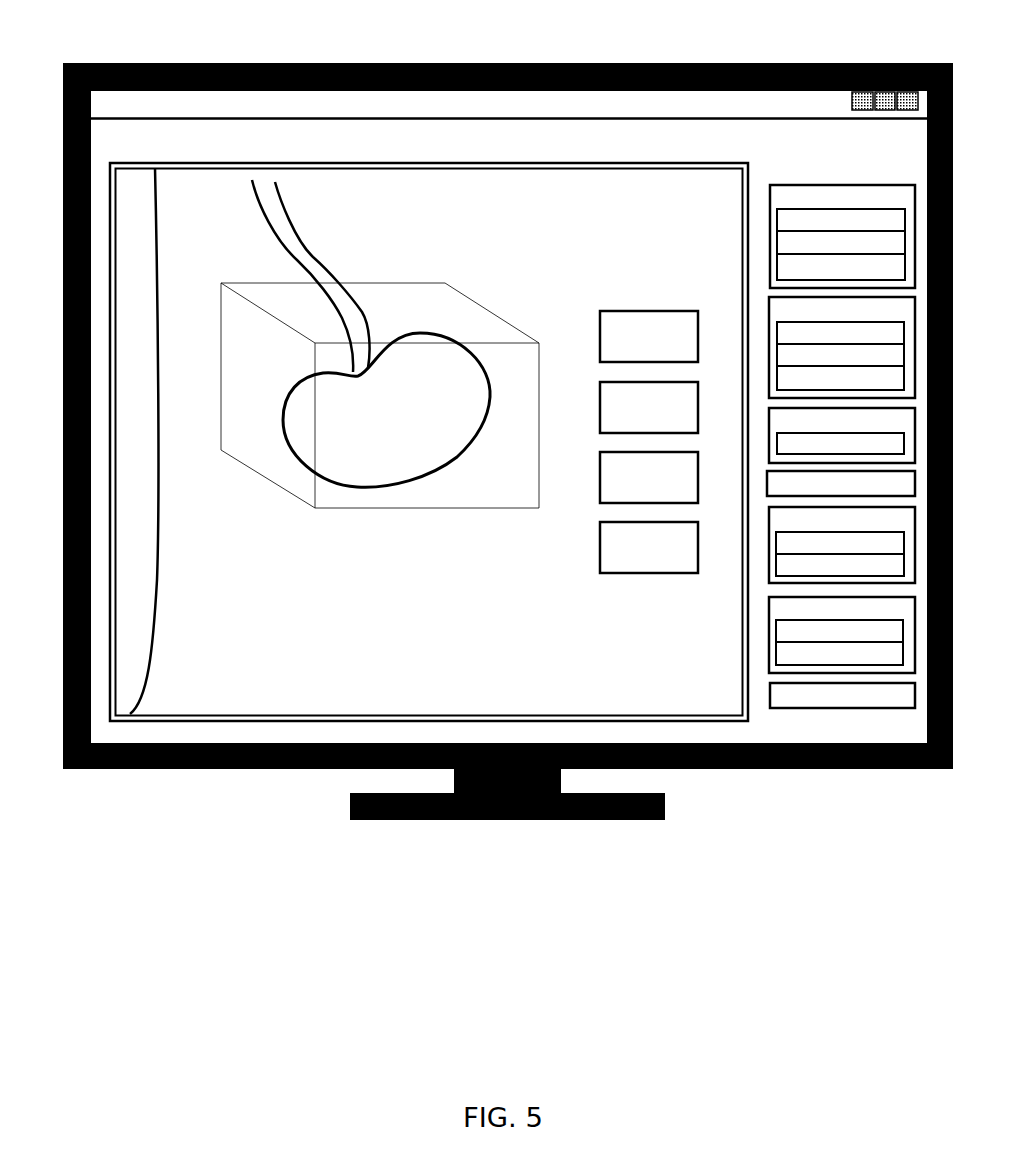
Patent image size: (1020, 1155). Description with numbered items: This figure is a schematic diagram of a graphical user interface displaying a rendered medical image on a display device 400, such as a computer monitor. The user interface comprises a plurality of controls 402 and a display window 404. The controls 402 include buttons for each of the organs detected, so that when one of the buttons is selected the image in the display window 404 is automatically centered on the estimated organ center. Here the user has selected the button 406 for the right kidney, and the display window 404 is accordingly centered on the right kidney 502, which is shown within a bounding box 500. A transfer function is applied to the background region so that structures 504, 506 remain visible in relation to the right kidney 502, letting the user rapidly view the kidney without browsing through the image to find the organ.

The display device 400 is at (478, 63).
The plurality of controls 402 is at (802, 501).
The display window 404 is at (650, 163).
The right kidney button 406 is at (777, 653).
The bounding box 500 is at (418, 283).
The right kidney 502 is at (457, 455).
The structure 504 is at (300, 232).
The structure 506 is at (650, 311).